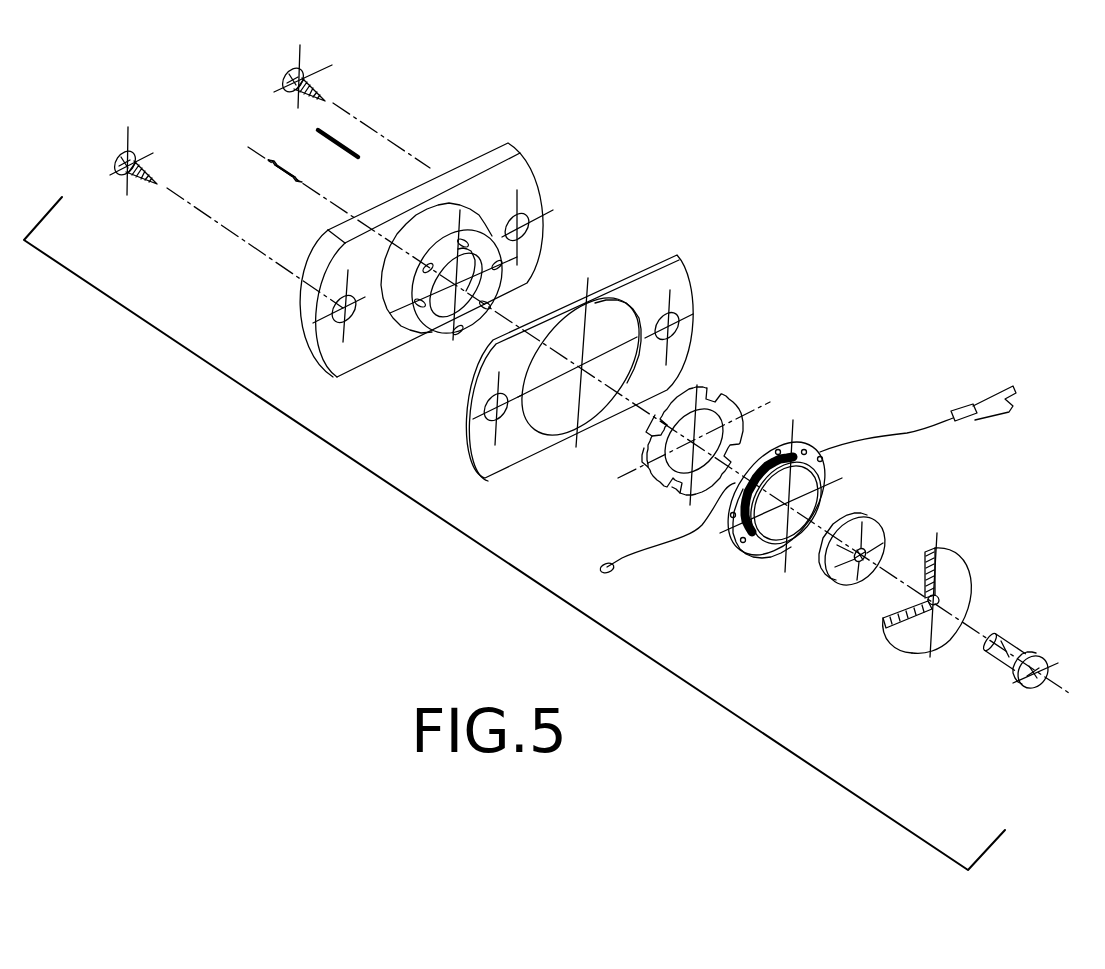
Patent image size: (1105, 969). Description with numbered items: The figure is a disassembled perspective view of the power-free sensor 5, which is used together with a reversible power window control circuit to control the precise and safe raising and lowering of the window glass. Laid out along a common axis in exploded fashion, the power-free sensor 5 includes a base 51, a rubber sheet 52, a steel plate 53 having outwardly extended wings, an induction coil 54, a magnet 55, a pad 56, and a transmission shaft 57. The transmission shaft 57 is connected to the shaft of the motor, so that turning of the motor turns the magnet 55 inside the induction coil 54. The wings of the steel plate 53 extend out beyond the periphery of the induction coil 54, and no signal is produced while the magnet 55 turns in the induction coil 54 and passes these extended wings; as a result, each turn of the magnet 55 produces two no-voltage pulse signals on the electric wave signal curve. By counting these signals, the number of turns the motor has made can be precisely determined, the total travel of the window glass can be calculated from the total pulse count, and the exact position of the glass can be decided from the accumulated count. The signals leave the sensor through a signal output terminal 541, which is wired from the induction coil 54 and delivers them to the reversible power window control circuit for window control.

The power-free sensor 5 is at (820, 262).
The base 51 is at (528, 180).
The rubber sheet 52 is at (690, 280).
The steel plate 53 is at (652, 487).
The induction coil 54 is at (731, 486).
The signal output terminal 541 is at (624, 566).
The magnet 55 is at (870, 537).
The pad 56 is at (957, 583).
The transmission shaft 57 is at (1017, 648).